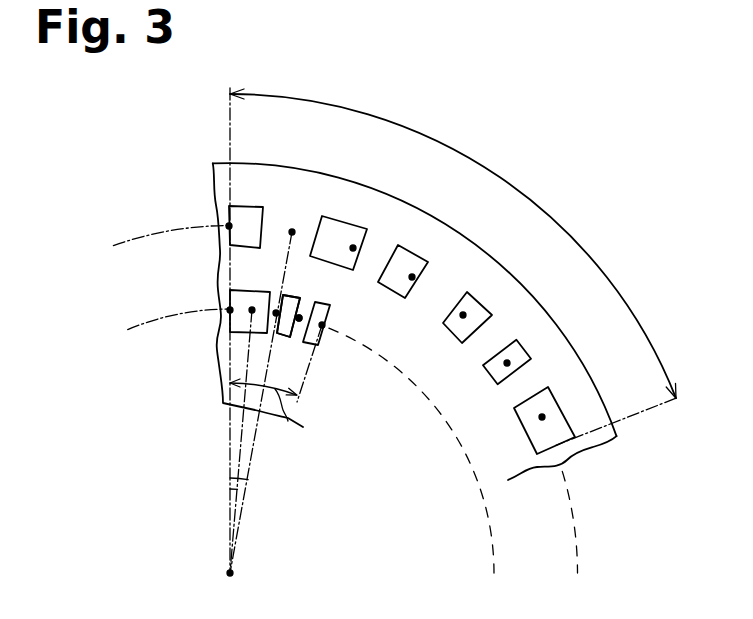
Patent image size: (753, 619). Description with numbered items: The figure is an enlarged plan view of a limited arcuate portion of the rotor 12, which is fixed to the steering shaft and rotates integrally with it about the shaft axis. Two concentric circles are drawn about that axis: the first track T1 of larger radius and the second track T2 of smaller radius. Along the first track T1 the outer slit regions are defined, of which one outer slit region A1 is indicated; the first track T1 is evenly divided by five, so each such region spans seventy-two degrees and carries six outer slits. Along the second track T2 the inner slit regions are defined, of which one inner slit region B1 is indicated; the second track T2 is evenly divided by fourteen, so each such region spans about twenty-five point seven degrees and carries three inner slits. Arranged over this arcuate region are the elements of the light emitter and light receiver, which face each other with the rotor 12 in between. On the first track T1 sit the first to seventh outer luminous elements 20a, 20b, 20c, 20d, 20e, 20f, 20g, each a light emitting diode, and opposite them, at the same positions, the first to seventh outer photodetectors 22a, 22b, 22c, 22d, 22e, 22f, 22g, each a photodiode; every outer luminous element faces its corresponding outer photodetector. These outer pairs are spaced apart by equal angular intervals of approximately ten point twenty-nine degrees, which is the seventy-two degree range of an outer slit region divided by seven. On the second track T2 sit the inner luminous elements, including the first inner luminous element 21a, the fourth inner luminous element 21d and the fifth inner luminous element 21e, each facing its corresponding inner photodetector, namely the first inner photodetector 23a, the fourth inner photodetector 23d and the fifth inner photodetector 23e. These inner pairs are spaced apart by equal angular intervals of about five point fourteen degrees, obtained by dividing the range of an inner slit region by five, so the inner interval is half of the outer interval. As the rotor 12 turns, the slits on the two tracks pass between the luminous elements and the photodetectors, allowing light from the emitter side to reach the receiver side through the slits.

The rotor 12 is at (370, 190).
The outer slit region A1 is at (453, 243).
The first track T1 is at (148, 233).
The second track T2 is at (150, 323).
The first outer luminous element 20a is at (265, 176).
The second outer luminous element 20b is at (335, 178).
The third outer luminous element 20c is at (397, 216).
The fourth outer luminous element 20d is at (460, 250).
The fifth outer luminous element 20e is at (519, 294).
The sixth outer luminous element 20f is at (557, 342).
The seventh outer luminous element 20g is at (588, 403).
The first outer photodetector 22a is at (229, 226).
The second outer photodetector 22b is at (292, 232).
The third outer photodetector 22c is at (353, 248).
The fourth outer photodetector 22d is at (412, 277).
The fifth outer photodetector 22e is at (463, 315).
The sixth outer photodetector 22f is at (507, 363).
The seventh outer photodetector 22g is at (542, 417).
The first inner luminous element 21a is at (196, 342).
The fourth inner luminous element 21d is at (327, 363).
The fifth inner luminous element 21e is at (366, 327).
The first inner photodetector 23a is at (230, 310).
The fourth inner photodetector 23d is at (288, 336).
The fifth inner photodetector 23e is at (322, 325).
The inner slit region B1 is at (263, 420).